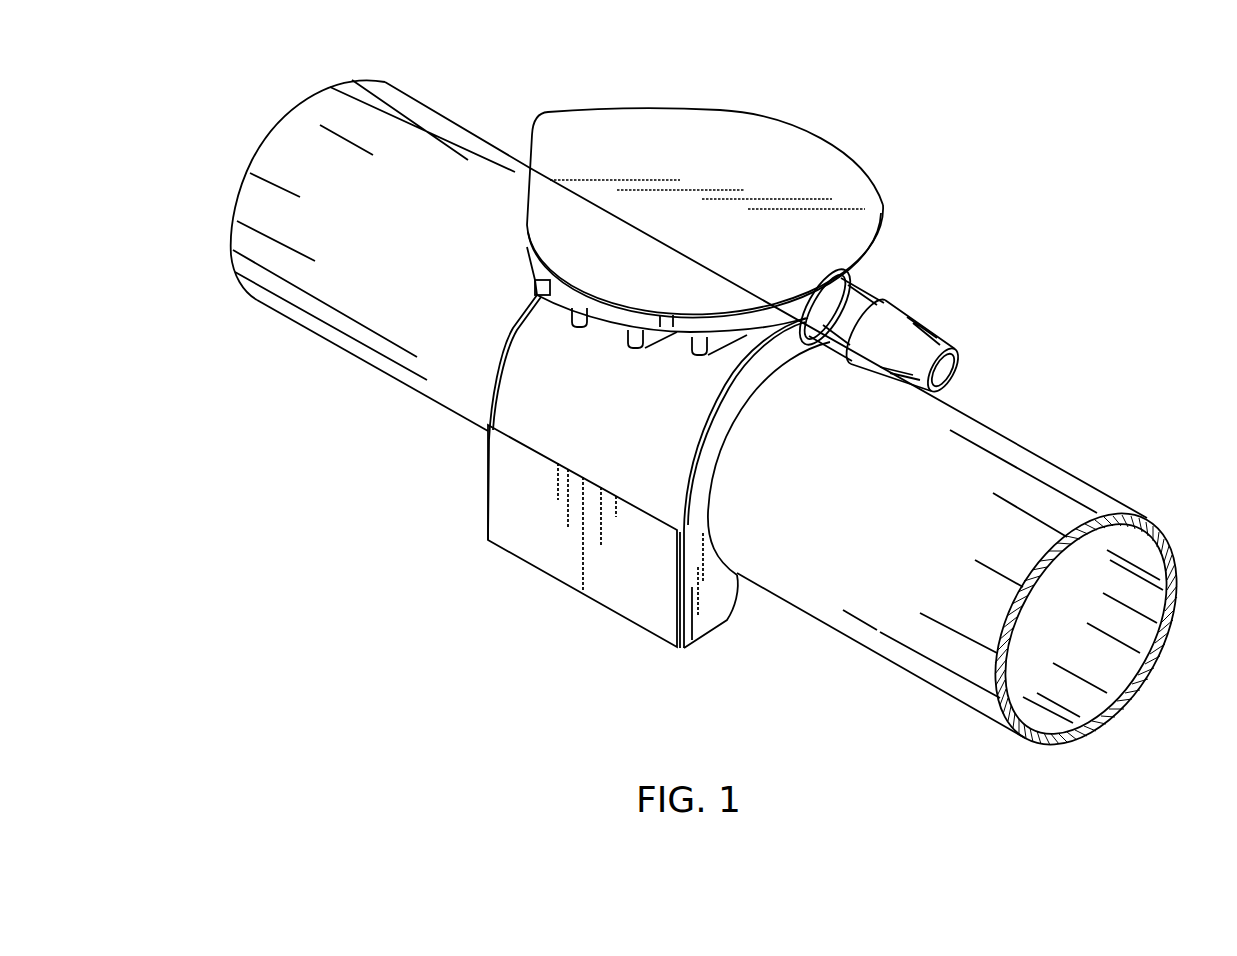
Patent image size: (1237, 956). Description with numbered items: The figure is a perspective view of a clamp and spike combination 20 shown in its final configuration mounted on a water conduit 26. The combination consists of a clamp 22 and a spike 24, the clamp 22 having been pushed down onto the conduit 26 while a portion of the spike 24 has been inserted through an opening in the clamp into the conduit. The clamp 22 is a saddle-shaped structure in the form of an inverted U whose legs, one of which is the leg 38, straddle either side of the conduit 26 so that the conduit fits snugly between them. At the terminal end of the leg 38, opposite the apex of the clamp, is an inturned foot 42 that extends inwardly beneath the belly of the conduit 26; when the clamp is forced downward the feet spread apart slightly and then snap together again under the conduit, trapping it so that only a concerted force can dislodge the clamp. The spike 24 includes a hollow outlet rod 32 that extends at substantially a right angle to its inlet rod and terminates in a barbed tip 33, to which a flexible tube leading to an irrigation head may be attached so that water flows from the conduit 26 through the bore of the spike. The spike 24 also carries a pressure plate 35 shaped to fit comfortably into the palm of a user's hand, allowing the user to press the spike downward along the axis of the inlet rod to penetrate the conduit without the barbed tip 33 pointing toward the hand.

The clamp and spike combination 20 is at (820, 101).
The clamp 22 is at (600, 358).
The spike 24 is at (842, 170).
The water conduit 26 is at (1057, 480).
The hollow outlet rod 32 is at (864, 292).
The barbed tip 33 is at (920, 333).
The pressure plate 35 is at (710, 125).
The leg 38 is at (650, 620).
The inturned foot 42 is at (725, 608).